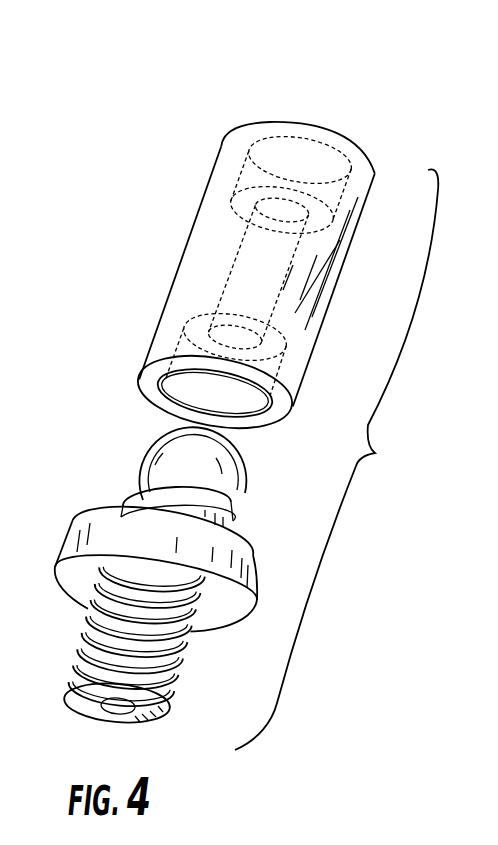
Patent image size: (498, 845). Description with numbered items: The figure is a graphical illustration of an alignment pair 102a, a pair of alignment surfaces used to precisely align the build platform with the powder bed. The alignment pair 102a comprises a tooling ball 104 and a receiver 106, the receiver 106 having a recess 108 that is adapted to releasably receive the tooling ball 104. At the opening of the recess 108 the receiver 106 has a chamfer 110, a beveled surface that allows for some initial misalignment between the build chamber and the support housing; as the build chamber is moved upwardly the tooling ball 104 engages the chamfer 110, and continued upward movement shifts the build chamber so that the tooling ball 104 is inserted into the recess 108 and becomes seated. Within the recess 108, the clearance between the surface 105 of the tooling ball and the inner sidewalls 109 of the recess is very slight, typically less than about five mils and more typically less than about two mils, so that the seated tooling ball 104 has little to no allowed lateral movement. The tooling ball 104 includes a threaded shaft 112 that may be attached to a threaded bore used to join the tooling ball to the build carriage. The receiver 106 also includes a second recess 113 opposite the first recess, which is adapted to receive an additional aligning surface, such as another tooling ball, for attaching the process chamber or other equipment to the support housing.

The alignment pair 102a is at (336, 459).
The tooling ball 104 is at (105, 512).
The surface of the tooling ball 105 is at (247, 472).
The receiver 106 is at (185, 243).
The recess 108 is at (178, 378).
The sidewalls of the recess 109 is at (233, 404).
The chamfer 110 is at (258, 414).
The threaded shaft 112 is at (67, 641).
The second recess 113 is at (245, 175).